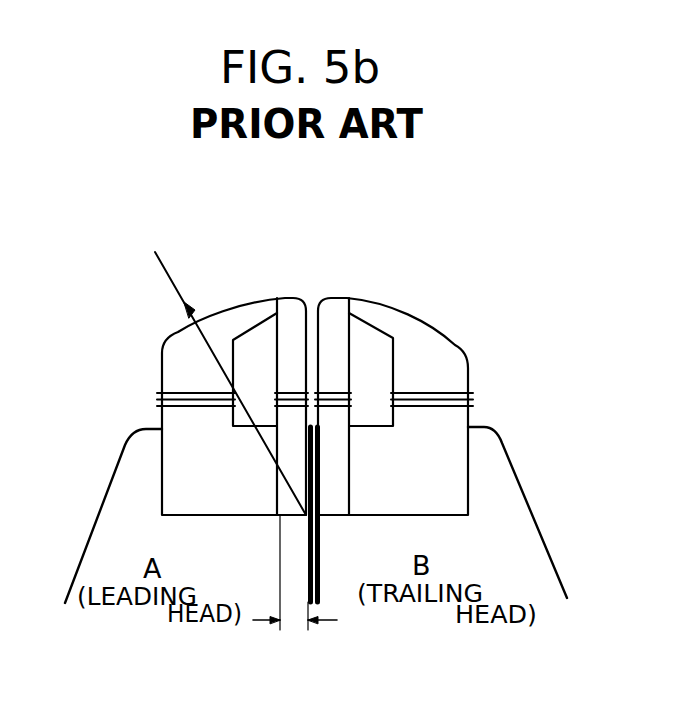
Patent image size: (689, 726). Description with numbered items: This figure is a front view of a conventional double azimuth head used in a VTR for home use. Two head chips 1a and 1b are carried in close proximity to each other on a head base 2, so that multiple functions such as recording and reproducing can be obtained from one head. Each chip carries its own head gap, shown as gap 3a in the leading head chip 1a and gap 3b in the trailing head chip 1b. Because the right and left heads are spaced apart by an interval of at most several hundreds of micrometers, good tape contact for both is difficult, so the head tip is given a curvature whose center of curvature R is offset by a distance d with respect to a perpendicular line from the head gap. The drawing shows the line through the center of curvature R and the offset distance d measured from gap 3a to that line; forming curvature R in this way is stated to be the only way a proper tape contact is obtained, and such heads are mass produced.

The head chip 1a is at (183, 428).
The head chip 1b is at (452, 428).
The head base 2 is at (507, 507).
The gap of leading head 3a is at (277, 298).
The gap of trailing head 3b is at (350, 302).
The center of curvature of the head tip R is at (230, 373).
The offset distance d is at (298, 620).